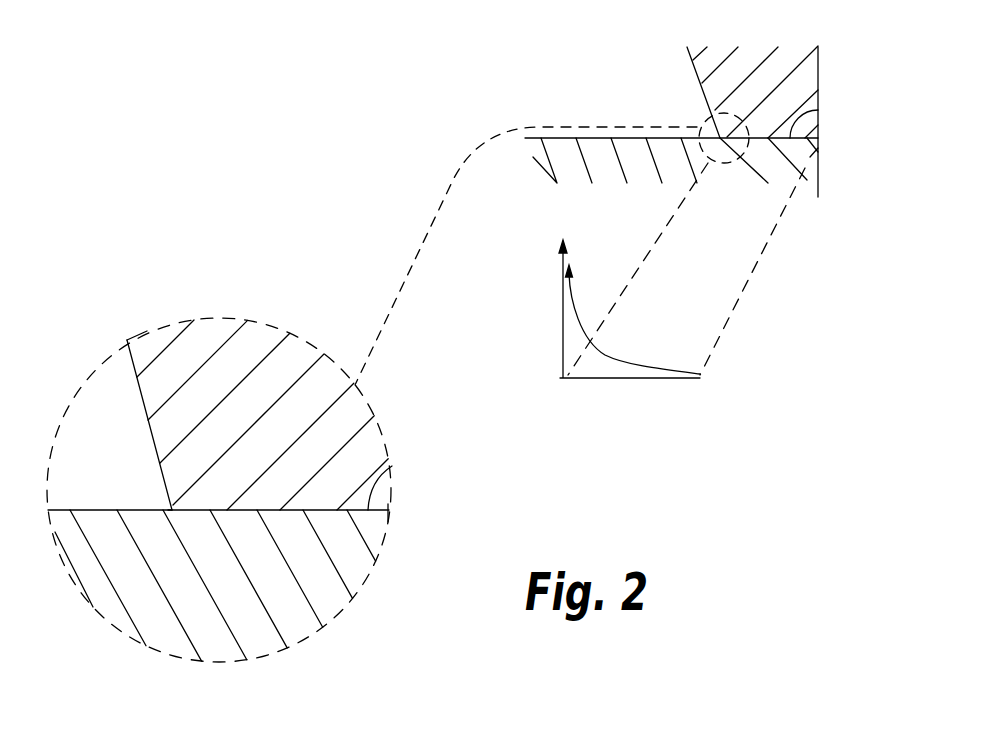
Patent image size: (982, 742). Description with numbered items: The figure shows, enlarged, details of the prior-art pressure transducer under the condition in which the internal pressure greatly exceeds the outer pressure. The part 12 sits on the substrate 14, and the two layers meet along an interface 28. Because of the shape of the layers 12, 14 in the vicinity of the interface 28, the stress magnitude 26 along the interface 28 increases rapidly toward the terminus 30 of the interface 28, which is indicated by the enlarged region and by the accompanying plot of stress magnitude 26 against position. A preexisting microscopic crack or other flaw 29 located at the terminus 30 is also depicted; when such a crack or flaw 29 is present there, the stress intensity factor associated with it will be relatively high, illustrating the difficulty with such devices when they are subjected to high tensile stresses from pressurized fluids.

The part 12 is at (818, 70).
The substrate 14 is at (818, 176).
The stress magnitude 26 is at (637, 361).
The interface 28 is at (820, 112).
The crack or flaw 29 is at (160, 504).
The terminus 30 is at (698, 125).